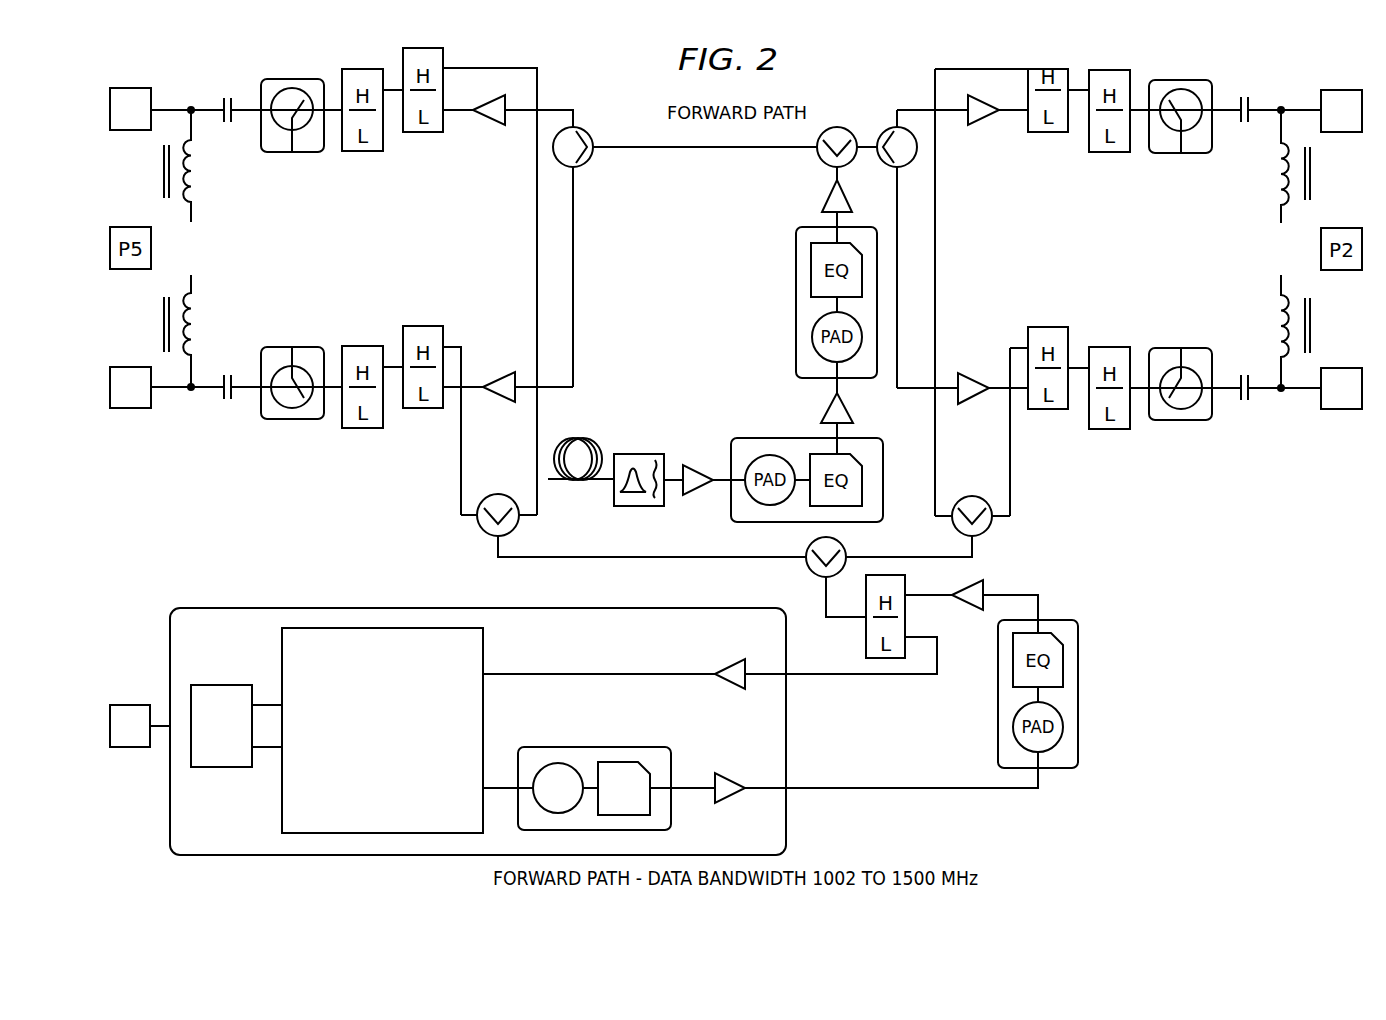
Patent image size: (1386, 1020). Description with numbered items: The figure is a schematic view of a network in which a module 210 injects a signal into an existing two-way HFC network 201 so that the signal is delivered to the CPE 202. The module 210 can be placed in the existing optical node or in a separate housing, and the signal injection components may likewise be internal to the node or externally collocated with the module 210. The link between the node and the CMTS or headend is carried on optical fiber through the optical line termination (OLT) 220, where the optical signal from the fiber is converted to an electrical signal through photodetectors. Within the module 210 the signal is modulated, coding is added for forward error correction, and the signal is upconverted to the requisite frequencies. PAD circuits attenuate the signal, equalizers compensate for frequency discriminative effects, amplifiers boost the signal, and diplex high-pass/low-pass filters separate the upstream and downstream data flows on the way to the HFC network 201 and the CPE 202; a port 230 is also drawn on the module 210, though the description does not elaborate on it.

The existing two-way HFC network 201 is at (637, 454).
The CPE 202 is at (128, 88).
The module 210 is at (478, 705).
The optical line termination (OLT) 220 is at (221, 770).
The port P4 230 is at (130, 750).